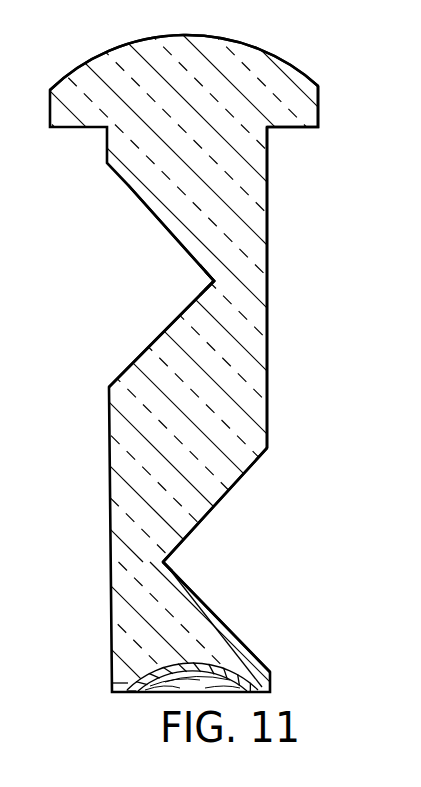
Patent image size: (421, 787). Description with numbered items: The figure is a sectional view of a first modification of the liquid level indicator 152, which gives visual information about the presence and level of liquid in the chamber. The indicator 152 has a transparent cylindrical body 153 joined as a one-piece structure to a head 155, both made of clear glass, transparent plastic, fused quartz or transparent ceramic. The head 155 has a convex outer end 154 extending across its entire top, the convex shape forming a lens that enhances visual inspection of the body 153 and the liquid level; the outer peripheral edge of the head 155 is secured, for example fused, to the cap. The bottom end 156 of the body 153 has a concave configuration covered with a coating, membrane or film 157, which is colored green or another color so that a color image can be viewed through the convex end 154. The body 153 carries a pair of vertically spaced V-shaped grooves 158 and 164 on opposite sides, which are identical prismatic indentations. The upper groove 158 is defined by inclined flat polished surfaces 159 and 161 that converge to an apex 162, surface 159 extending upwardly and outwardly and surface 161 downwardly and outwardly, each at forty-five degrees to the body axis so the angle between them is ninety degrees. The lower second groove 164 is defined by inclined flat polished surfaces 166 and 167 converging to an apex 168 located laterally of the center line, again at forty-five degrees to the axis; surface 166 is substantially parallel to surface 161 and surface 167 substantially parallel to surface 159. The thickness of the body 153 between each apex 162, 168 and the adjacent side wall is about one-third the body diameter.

The liquid level indicator 152 is at (66, 59).
The body 153 is at (258, 412).
The convex outer end 154 is at (255, 49).
The head 155 is at (310, 115).
The bottom end 156 is at (158, 664).
The film 157 is at (145, 690).
The V-shaped groove 158 is at (147, 286).
The inclined flat polished surface 159 is at (128, 186).
The inclined flat polished surface 161 is at (128, 364).
The apex 162 is at (218, 287).
The second groove 164 is at (217, 567).
The inclined flat polished surface 166 is at (235, 483).
The inclined flat polished surface 167 is at (232, 630).
The apex 168 is at (161, 562).